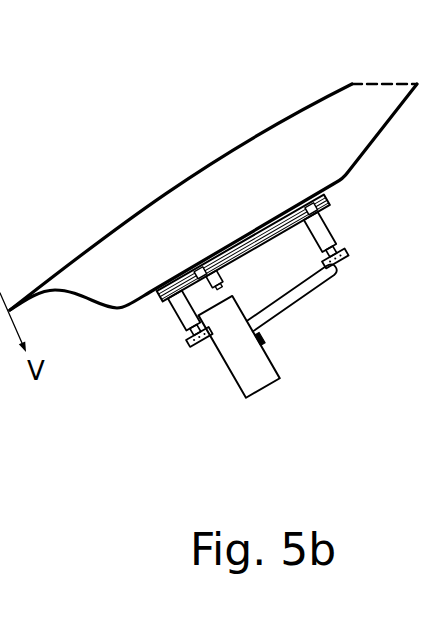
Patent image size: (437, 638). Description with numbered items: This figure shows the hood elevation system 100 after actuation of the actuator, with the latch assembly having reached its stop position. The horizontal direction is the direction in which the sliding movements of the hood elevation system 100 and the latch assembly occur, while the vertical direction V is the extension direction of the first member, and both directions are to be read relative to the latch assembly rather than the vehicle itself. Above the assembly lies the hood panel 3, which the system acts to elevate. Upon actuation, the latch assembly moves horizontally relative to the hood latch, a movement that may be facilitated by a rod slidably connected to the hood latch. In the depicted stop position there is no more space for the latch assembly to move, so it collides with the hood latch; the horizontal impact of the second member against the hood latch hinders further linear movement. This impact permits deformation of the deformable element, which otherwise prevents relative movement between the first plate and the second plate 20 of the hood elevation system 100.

The hood elevation system 100 is at (223, 238).
The panel 3 is at (255, 117).
The second plate 20 is at (425, 273).